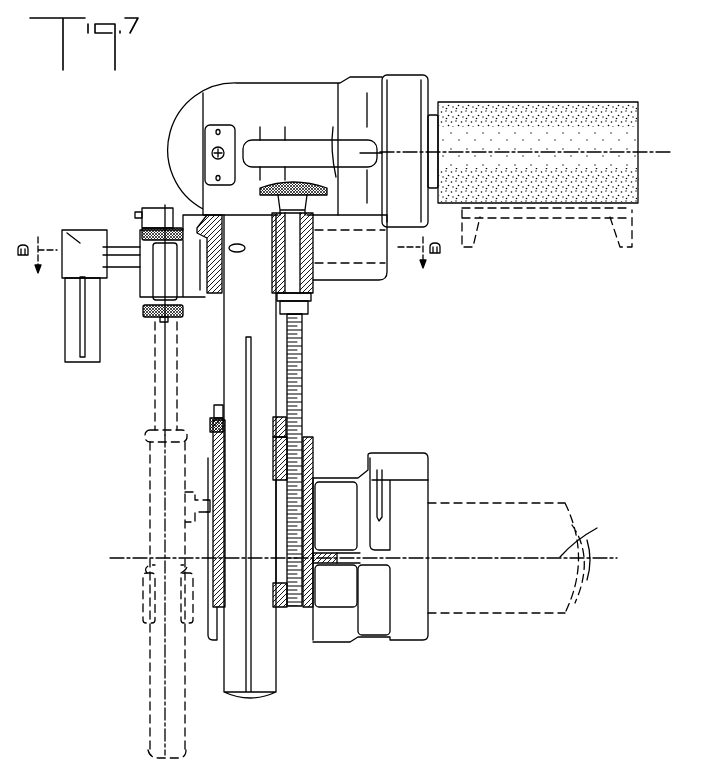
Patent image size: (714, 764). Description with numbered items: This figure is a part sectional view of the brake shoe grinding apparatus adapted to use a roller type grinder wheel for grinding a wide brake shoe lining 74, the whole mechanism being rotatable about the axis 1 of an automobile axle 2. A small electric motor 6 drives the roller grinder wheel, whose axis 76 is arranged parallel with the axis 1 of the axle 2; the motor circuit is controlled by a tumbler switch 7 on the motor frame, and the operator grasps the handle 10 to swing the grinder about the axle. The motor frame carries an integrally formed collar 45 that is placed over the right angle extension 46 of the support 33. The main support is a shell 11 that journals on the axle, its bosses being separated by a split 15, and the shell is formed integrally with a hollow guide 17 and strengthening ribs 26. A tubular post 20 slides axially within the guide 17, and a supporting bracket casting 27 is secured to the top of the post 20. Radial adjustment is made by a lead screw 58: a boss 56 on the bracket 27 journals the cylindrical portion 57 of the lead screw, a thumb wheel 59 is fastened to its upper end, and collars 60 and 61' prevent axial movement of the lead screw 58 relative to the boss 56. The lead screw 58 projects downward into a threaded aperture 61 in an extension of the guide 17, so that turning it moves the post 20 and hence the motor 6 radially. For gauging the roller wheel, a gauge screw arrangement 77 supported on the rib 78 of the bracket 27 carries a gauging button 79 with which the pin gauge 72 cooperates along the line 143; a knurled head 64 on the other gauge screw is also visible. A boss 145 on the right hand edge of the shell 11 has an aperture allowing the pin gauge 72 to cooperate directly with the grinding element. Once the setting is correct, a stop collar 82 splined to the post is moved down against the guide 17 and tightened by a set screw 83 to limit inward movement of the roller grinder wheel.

The axis 1 is at (584, 546).
The automobile axle 2 is at (492, 507).
The electric motor 6 is at (293, 90).
The tumbler switch 7 is at (214, 150).
The handle 10 is at (303, 153).
The shell 11 is at (342, 633).
The split 15 is at (597, 117).
The hollow guide 17 is at (213, 455).
The tubular post 20 is at (262, 667).
The strengthening ribs 26 is at (347, 562).
The supporting bracket casting 27 is at (203, 290).
The support 33 is at (125, 258).
The collar 45 is at (367, 272).
The right angle extension 46 is at (72, 318).
The boss 56 is at (313, 290).
The cylindrical portion 57 is at (297, 252).
The lead screw 58 is at (303, 378).
The thumb wheel 59 is at (289, 183).
The collar 60 is at (305, 207).
The threaded aperture 61 is at (309, 512).
The collar 61' is at (311, 315).
The knurled head 64 is at (143, 312).
The pin gauge 72 is at (162, 482).
The wide brake shoe lining 74 is at (620, 217).
The axis of the roller 76 is at (620, 153).
The gauge screw arrangement 77 is at (142, 227).
The rib 78 is at (200, 217).
The gauging button 79 is at (147, 243).
The stop collar 82 is at (218, 418).
The set screw 83 is at (211, 427).
The line 143 is at (165, 395).
The boss 145 is at (410, 467).